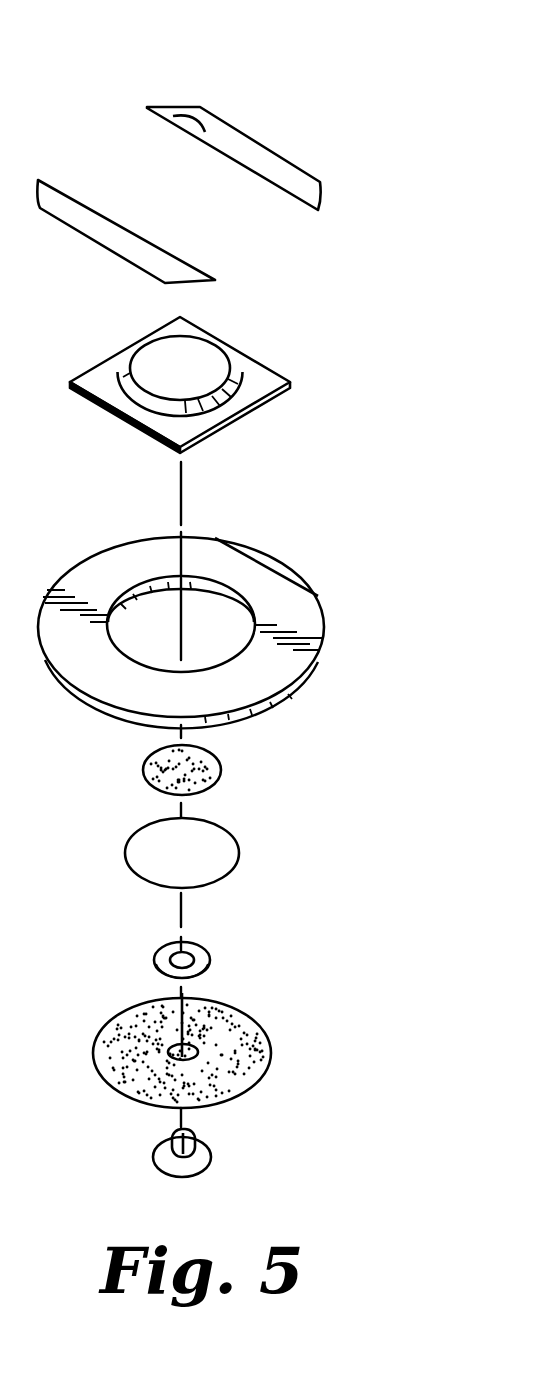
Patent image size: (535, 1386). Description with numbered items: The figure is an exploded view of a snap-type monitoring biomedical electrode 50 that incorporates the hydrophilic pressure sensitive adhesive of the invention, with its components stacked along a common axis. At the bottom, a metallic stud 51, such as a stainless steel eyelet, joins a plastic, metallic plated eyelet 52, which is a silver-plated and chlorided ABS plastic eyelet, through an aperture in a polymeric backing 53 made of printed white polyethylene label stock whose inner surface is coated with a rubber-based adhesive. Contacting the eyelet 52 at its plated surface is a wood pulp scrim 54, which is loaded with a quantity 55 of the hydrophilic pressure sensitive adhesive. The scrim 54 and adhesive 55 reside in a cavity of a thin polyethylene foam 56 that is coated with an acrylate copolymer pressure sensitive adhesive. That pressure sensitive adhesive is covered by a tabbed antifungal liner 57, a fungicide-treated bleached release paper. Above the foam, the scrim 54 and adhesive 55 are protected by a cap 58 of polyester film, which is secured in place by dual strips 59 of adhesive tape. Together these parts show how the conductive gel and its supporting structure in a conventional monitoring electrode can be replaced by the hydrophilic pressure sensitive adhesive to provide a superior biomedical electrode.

The electrode 50 is at (333, 73).
The metallic stud 51 is at (203, 1153).
The plastic, metallic plated eyelet 52 is at (207, 950).
The polymeric backing 53 is at (268, 1052).
The wood pulp scrim 54 is at (240, 850).
The quantity of hydrophilic pressure sensitive adhesive 55 is at (143, 765).
The polyethylene foam 56 is at (285, 693).
The tabbed antifungal liner 57 is at (307, 618).
The cap 58 is at (258, 378).
The dual strips of adhesive tape 59 is at (163, 111).